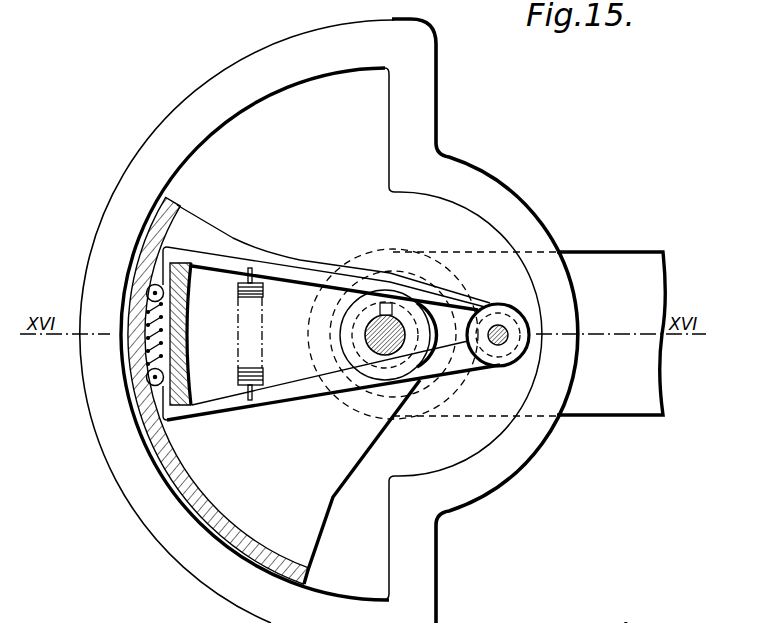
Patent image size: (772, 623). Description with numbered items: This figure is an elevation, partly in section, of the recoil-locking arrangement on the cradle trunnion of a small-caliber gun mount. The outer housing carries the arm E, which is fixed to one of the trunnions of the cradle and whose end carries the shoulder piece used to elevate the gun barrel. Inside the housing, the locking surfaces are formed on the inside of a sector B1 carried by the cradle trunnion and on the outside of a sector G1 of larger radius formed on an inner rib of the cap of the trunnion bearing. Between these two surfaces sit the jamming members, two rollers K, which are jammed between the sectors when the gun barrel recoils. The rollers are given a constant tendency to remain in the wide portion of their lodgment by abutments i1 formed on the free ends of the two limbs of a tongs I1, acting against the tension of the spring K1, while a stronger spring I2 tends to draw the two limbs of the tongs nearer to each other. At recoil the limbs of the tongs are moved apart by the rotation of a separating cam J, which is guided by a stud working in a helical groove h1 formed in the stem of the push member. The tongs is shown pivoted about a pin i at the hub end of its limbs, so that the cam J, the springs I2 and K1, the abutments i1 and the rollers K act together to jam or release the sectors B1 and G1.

The sector B1 is at (323, 523).
The arm E is at (621, 402).
The sector G1 is at (178, 368).
The tongs limbs I1 is at (303, 276).
The spring I2 is at (238, 292).
The separating cam J is at (347, 341).
The rollers K is at (147, 292).
The spring K1 is at (145, 348).
The helical groove h1 is at (403, 324).
The pin i is at (508, 332).
The abutments i1 is at (80, 437).